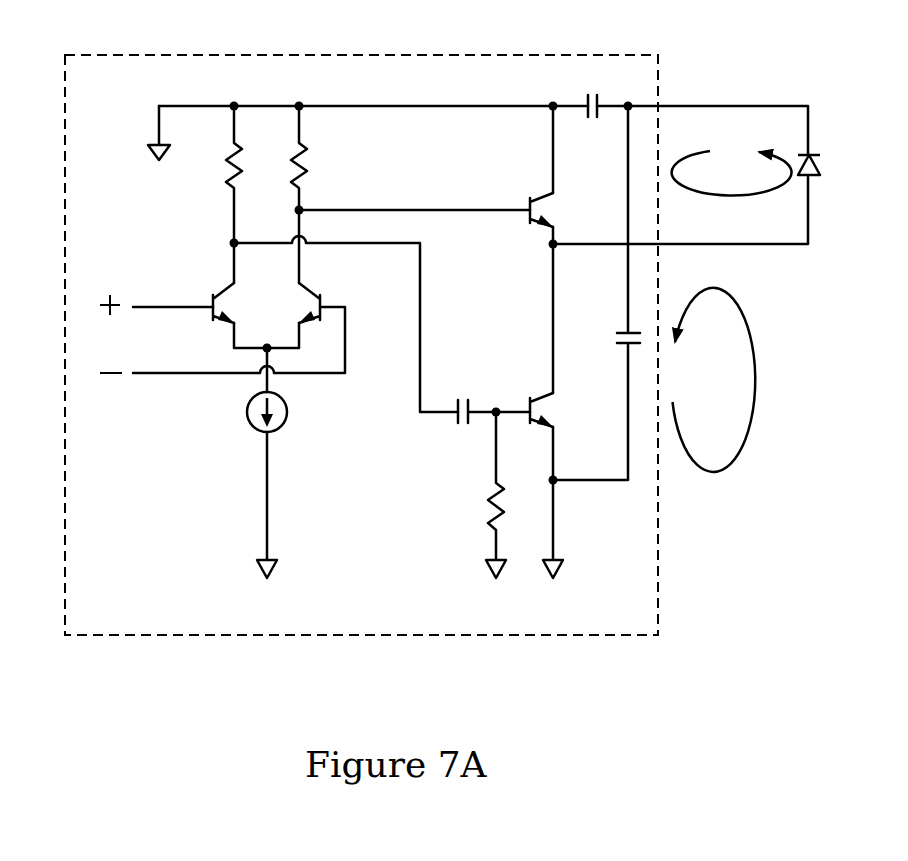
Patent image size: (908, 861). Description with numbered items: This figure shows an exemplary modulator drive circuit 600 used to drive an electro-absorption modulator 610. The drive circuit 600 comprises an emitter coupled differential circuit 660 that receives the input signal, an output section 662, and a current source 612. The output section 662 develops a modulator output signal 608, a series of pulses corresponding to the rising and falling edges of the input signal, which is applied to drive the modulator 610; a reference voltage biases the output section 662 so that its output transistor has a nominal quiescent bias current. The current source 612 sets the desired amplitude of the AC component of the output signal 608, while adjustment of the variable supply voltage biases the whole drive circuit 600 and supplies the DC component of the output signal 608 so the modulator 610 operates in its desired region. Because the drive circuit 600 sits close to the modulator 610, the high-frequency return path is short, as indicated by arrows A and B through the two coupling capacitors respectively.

The modulator drive circuit 600 is at (436, 345).
The emitter coupled differential circuit 660 is at (220, 282).
The output section 662 is at (533, 282).
The current source 612 is at (285, 404).
The modulator 610 is at (818, 152).
The modulator output signal 608 is at (776, 246).
The arrow A is at (782, 150).
The arrow B is at (742, 447).